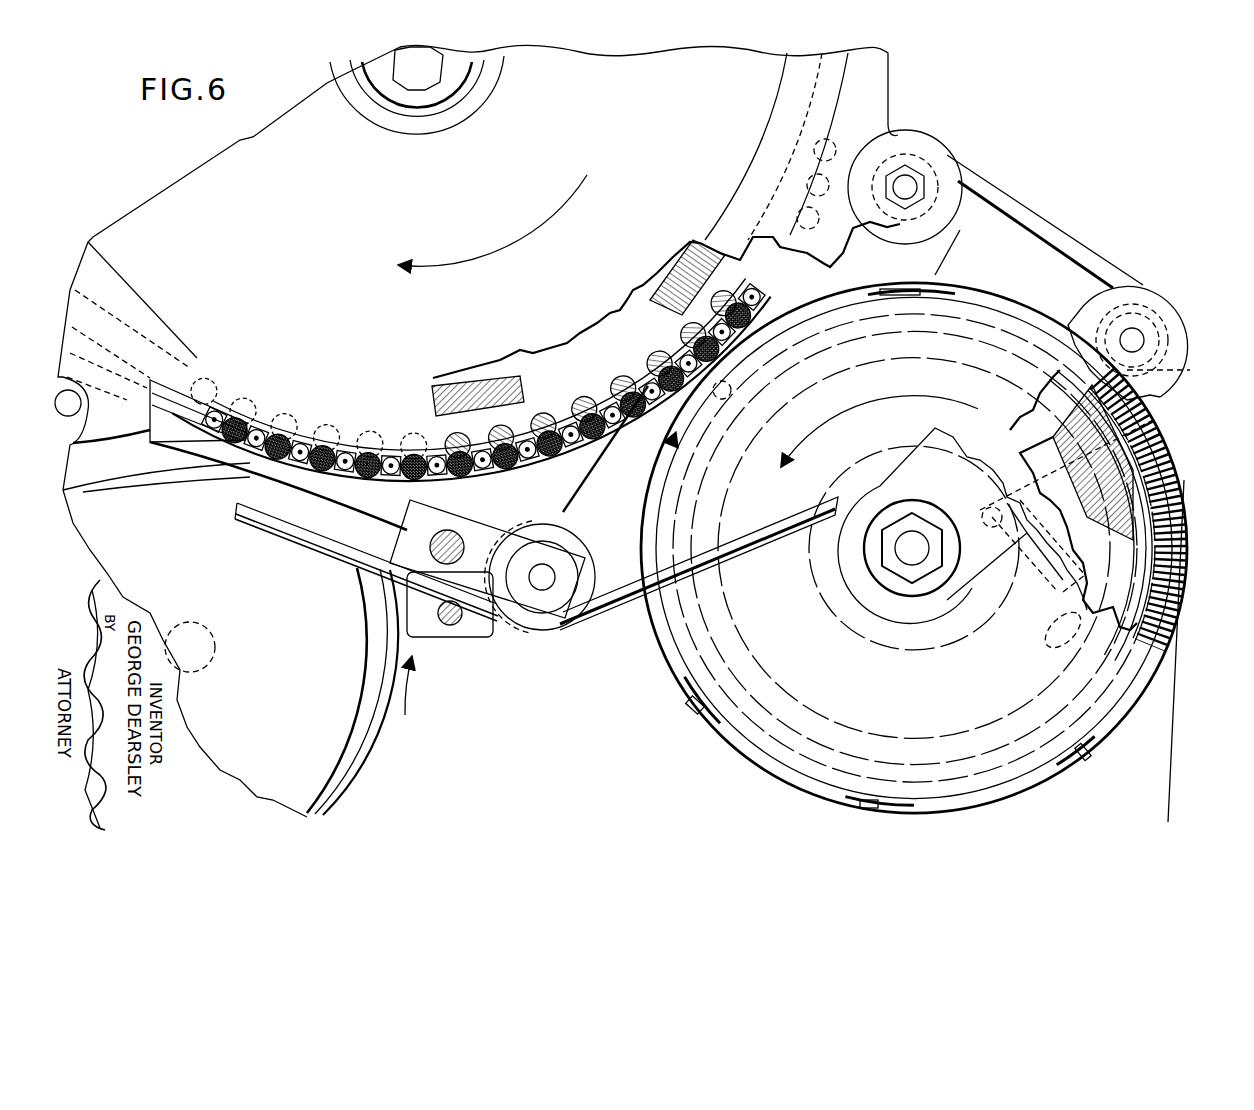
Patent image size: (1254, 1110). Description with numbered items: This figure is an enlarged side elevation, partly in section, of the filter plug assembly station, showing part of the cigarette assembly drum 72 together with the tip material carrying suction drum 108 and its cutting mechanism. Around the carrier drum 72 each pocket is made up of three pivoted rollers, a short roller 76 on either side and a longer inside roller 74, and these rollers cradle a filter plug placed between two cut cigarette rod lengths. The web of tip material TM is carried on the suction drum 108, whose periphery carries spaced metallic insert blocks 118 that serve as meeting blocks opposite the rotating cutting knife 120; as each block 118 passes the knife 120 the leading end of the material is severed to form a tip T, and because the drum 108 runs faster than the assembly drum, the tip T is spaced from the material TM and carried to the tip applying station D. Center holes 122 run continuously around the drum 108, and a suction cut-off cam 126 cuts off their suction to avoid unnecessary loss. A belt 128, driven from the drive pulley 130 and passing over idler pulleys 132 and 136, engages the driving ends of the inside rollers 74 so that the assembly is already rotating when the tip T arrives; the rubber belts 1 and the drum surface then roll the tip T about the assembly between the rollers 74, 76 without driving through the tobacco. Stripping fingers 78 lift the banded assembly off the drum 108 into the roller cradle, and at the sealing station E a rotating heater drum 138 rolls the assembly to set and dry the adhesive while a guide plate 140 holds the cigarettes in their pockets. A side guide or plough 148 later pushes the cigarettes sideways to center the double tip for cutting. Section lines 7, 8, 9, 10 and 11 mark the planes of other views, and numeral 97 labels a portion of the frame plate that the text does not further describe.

The rubber belts 1 is at (860, 280).
The section line 7- 7 is at (1216, 355).
The section line 8- 8 is at (1170, 457).
The section line 9- 9 is at (597, 543).
The section line 10- 10 is at (1023, 162).
The section line 11- 11 is at (433, 385).
The cigarette assembly drum 72 is at (238, 170).
The inside roller 74 is at (652, 356).
The short roller 76 is at (348, 427).
The stripping fingers 78 is at (735, 403).
The plate edge 97 is at (853, 86).
The suction drum 108 is at (1022, 337).
The metallic insert blocks 118 is at (950, 290).
The rotating cutting knife 120 is at (1170, 370).
The center holes 122 is at (1178, 492).
The suction cut-off cam 126 is at (1150, 435).
The belt 128 is at (1040, 228).
The drive pulley 130 is at (1150, 298).
The idler pulley 132 is at (920, 152).
The idler pulley 136 is at (533, 618).
The heater drum 138 is at (360, 743).
The guide plate 140 is at (352, 495).
The side guide or plough 148 is at (135, 318).
The tip applying station D is at (672, 326).
The sealing station E is at (293, 405).
The tip T is at (925, 285).
The tip material TM is at (1163, 782).